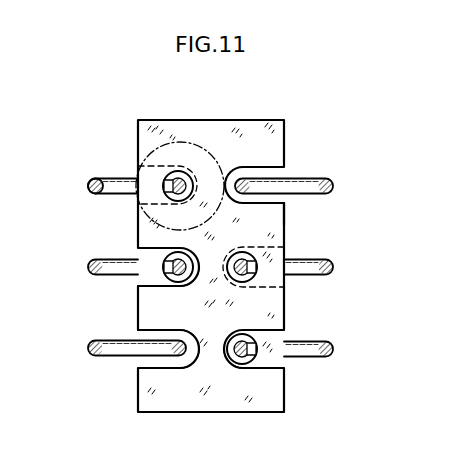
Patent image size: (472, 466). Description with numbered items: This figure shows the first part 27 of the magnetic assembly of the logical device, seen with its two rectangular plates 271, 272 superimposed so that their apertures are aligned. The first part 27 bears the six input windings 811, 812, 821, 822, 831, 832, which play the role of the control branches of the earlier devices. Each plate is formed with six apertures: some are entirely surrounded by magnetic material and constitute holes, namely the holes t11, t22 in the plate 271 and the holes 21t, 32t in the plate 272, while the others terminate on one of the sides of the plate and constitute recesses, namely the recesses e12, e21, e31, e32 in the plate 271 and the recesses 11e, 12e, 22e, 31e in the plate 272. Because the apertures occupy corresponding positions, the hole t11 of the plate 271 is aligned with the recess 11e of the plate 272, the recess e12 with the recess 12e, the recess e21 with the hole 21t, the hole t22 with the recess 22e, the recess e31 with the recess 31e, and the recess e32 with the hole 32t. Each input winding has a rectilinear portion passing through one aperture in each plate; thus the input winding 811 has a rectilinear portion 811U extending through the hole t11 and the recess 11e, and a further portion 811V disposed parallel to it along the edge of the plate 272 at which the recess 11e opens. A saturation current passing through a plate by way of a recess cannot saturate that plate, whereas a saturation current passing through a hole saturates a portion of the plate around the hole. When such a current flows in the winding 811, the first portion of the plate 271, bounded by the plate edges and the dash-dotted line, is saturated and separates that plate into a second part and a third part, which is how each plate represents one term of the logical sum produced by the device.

The first part 27 is at (170, 108).
The rectangular plate 271 is at (192, 125).
The rectangular plate 272 is at (252, 150).
The input winding 811 is at (123, 178).
The rectilinear portion 811U is at (167, 175).
The portion of input winding 811V is at (88, 186).
The input winding 812 is at (288, 178).
The hole t11 is at (165, 190).
The recess 11e is at (160, 206).
The recess e12 is at (278, 205).
The recess 12e is at (285, 214).
The input winding 821 is at (123, 260).
The input winding 822 is at (289, 260).
The hole 21t is at (165, 271).
The recess e21 is at (157, 285).
The hole t22 is at (257, 271).
The recess 22e is at (262, 288).
The input winding 831 is at (123, 341).
The input winding 832 is at (289, 341).
The recess e31 is at (158, 366).
The recess 31e is at (165, 370).
The hole 32t is at (255, 353).
The recess e32 is at (262, 369).